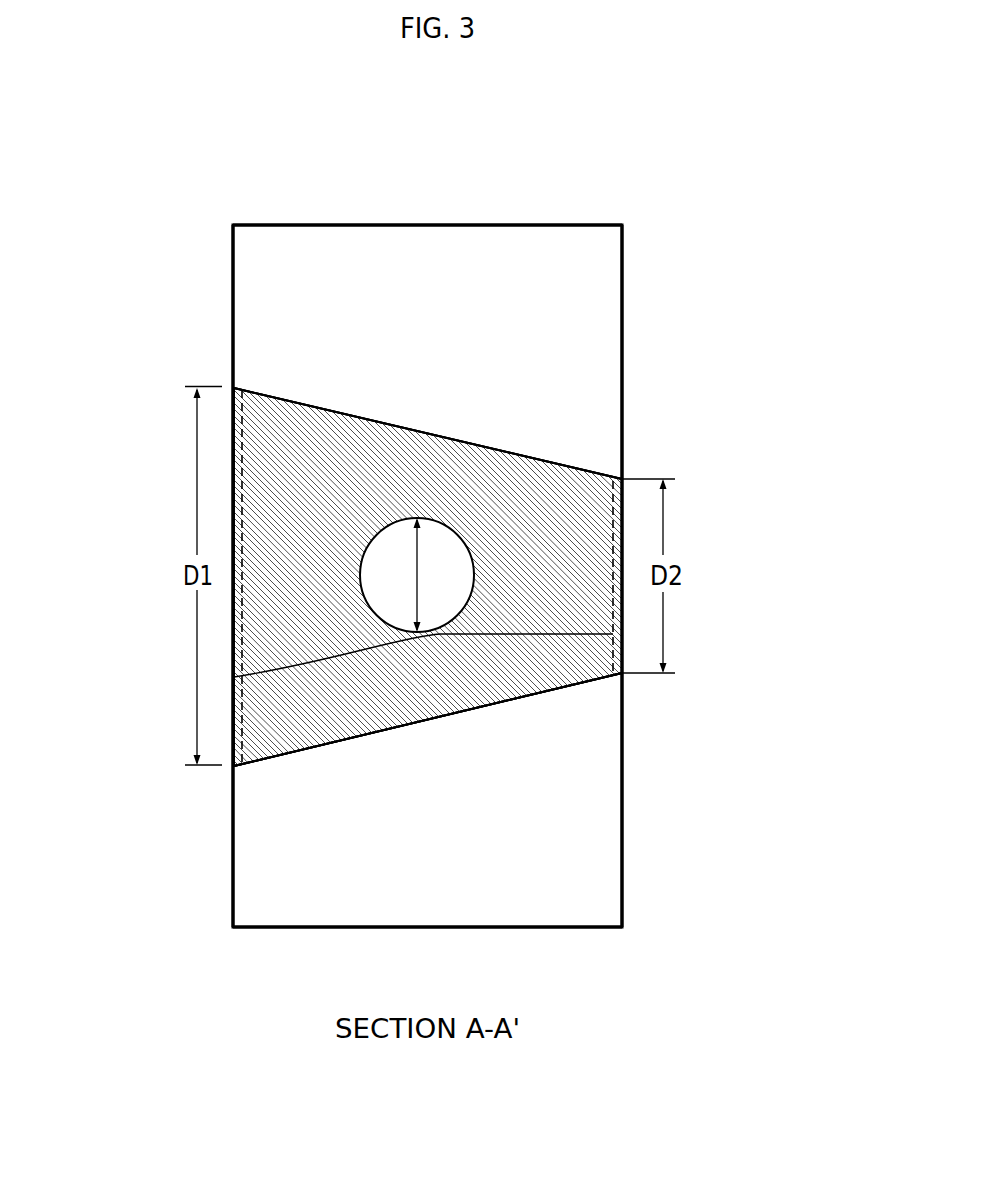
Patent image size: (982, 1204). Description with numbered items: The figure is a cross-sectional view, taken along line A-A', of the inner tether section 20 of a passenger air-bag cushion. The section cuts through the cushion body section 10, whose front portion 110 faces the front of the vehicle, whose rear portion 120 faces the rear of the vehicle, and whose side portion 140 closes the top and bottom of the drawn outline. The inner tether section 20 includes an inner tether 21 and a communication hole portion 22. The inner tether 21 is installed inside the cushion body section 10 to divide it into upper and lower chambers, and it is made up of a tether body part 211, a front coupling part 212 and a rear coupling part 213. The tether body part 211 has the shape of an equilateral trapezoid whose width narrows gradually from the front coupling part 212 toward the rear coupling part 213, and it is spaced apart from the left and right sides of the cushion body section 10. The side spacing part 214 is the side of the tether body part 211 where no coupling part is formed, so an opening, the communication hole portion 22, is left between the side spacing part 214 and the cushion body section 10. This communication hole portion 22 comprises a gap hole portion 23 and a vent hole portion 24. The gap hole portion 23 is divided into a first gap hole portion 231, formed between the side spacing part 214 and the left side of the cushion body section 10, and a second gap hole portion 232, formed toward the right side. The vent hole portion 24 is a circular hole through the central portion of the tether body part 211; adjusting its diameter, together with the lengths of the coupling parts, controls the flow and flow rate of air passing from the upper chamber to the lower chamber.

The cushion body section 10 is at (548, 222).
The front portion 110 is at (233, 260).
The rear portion 120 is at (622, 268).
The side portion 140 is at (428, 225).
The inner tether section 20 is at (413, 422).
The inner tether 21 is at (343, 563).
The tether body part 211 is at (283, 705).
The front coupling part 212 is at (237, 633).
The rear coupling part 213 is at (237, 675).
The side spacing part 214 is at (298, 403).
The communication hole portion 22 is at (519, 552).
The gap hole portion 23 is at (510, 577).
The first gap hole portion 231 is at (586, 730).
The second gap hole portion 232 is at (590, 448).
The vent hole portion 24 is at (442, 546).